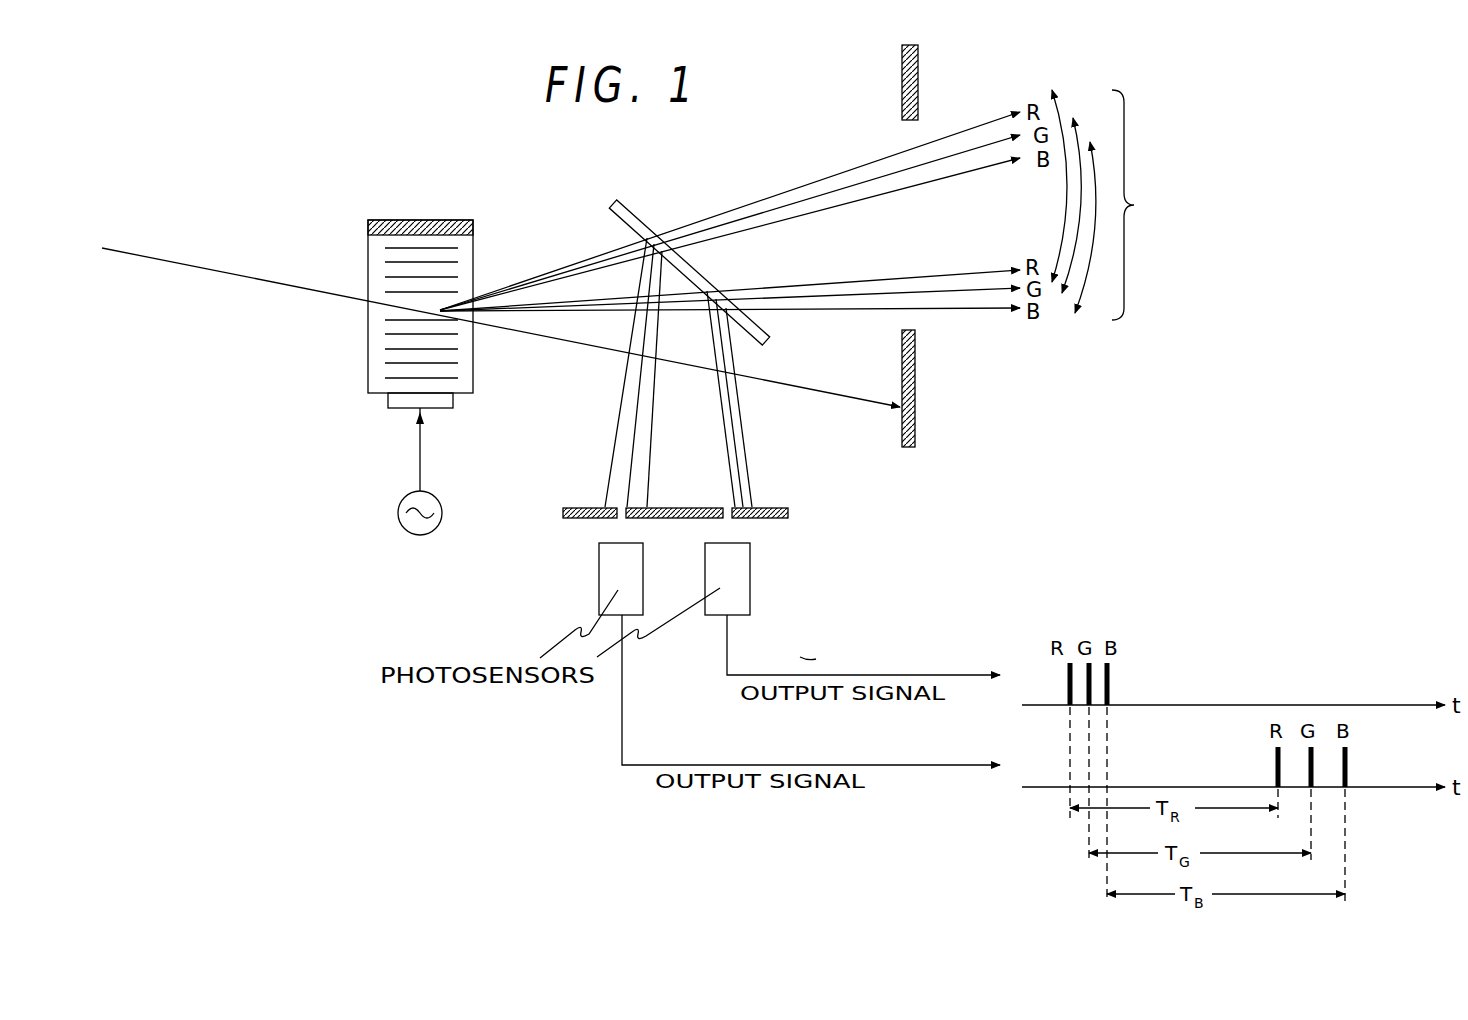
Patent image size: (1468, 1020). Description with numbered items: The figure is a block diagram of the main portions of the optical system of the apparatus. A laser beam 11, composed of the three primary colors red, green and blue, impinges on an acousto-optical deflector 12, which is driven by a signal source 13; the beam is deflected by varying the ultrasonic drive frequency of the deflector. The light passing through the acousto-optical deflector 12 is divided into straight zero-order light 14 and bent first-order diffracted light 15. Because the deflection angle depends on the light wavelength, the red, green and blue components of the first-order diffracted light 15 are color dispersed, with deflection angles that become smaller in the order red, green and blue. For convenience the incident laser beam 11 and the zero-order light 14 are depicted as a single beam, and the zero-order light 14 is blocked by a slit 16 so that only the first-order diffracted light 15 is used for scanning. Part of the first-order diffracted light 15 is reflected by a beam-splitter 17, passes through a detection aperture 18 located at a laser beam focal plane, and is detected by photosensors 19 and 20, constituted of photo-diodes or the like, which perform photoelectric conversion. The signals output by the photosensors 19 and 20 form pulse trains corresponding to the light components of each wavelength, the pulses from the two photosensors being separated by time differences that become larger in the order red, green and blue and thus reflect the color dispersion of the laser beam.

The laser beam 11 is at (120, 246).
The acousto-optical deflector (AOD) 12 is at (375, 220).
The signal source 13 is at (410, 534).
The zero-order light 14 is at (832, 398).
The first-order diffracted light 15 is at (1190, 205).
The slit 16 is at (900, 71).
The beam-splitter 17 is at (627, 207).
The detection aperture 18 is at (569, 519).
The photosensor 19 is at (750, 595).
The photosensor 20 is at (597, 586).